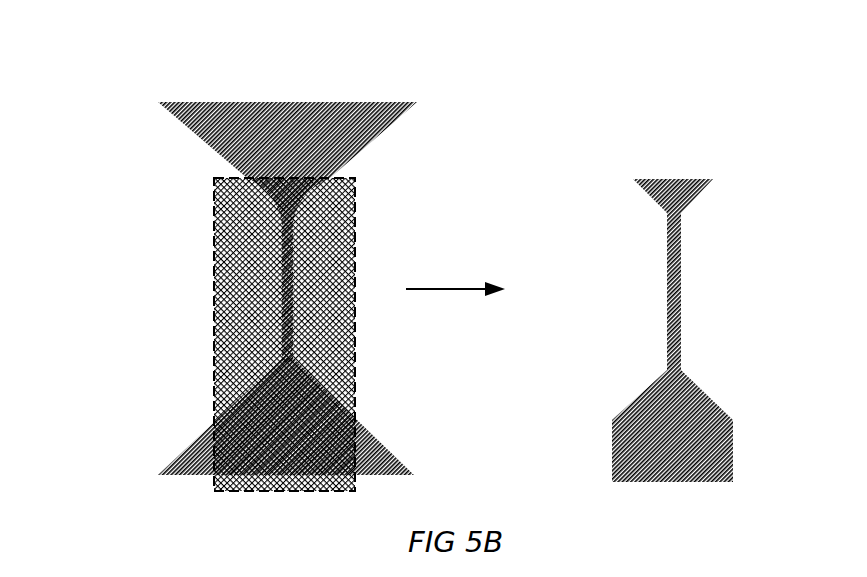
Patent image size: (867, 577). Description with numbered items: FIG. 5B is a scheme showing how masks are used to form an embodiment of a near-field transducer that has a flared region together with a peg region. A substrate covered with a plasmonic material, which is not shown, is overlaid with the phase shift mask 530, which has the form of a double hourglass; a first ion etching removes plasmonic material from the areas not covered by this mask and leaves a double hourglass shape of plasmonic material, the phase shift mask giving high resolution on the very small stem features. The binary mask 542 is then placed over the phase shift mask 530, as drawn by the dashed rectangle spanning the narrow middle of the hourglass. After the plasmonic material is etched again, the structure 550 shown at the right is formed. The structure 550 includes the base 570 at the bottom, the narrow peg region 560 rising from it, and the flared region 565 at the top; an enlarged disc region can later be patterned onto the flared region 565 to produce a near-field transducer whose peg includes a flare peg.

The phase shift mask 530 is at (134, 125).
The binary mask 542 is at (164, 244).
The structure 550 is at (626, 302).
The flared region 565 is at (652, 195).
The peg region 560 is at (667, 277).
The base 570 is at (645, 394).